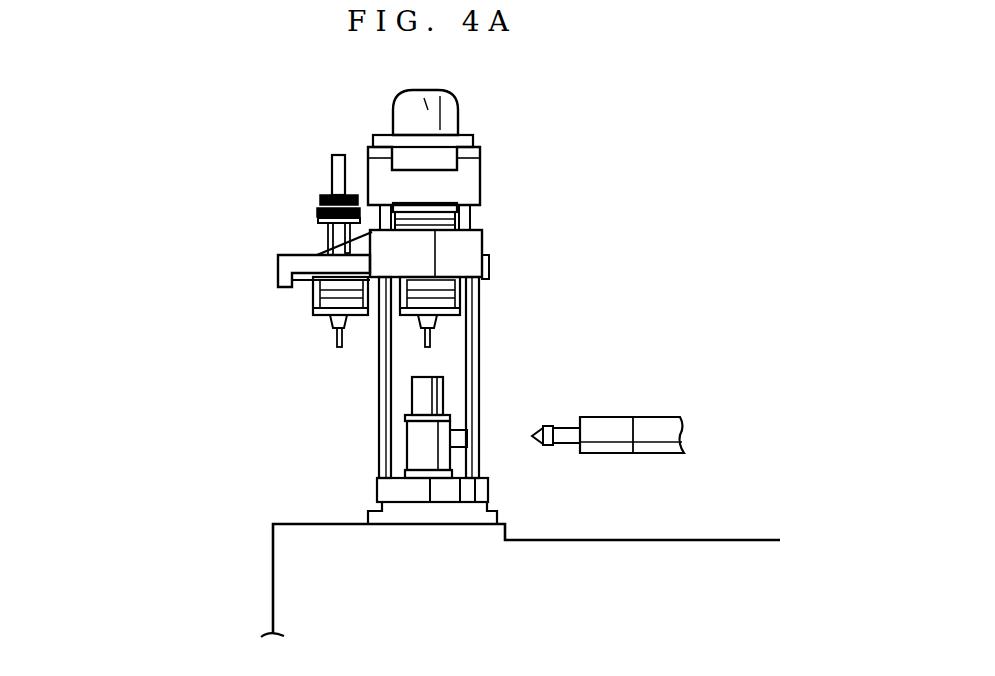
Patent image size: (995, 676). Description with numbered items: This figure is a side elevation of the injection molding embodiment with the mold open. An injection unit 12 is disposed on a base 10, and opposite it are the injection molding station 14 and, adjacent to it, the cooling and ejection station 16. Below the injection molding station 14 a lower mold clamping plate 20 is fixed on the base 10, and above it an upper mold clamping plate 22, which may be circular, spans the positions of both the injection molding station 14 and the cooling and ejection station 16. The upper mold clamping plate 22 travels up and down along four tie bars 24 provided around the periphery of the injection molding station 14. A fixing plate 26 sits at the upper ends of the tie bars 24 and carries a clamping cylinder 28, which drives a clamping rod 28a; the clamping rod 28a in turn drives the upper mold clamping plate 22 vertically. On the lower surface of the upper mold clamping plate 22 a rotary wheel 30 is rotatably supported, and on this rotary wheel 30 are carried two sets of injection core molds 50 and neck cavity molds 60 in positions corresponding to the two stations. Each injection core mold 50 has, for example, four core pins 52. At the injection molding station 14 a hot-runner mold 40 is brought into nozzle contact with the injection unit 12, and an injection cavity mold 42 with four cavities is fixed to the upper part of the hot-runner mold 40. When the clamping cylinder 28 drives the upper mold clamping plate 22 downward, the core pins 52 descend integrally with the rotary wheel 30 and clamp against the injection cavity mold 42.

The base 10 is at (582, 538).
The injection unit 12 is at (650, 440).
The injection molding station 14 is at (507, 274).
The cooling and ejection station 16 is at (295, 245).
The lower mold clamping plate 20 is at (400, 512).
The upper mold clamping plate 22 is at (278, 267).
The tie bars 24 is at (380, 393).
The fixing plate 26 is at (482, 175).
The clamping cylinder 28 is at (460, 113).
The clamping rod 28a is at (483, 218).
The rotary wheel 30 is at (307, 280).
The hot-runner mold 40 is at (418, 450).
The injection cavity mold 42 is at (418, 397).
The injection core molds 50 is at (392, 337).
The core pins 52 is at (333, 343).
The neck cavity molds 60 is at (438, 322).